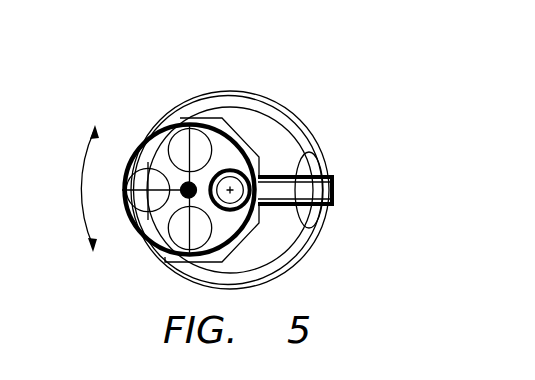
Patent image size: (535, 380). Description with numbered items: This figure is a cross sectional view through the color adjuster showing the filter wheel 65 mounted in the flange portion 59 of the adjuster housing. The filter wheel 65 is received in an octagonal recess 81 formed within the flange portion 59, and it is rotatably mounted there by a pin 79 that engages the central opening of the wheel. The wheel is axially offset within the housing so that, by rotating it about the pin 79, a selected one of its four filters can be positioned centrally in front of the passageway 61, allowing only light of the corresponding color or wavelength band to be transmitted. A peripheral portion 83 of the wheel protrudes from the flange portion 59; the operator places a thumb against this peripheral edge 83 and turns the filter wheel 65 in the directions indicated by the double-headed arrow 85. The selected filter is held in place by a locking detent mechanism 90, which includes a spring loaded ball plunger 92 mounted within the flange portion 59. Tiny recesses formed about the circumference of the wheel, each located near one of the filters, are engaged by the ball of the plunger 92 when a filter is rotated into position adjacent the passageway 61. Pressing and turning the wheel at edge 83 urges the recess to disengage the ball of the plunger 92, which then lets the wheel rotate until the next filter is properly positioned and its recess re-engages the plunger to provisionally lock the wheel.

The flange portion 59 is at (267, 138).
The passageway 61 is at (233, 186).
The filter wheel 65 is at (138, 150).
The pin 79 is at (195, 184).
The octagonal recess 81 is at (267, 284).
The peripheral portion 83 is at (132, 222).
The double-headed arrow 85 is at (80, 185).
The locking detent mechanism 90 is at (311, 152).
The spring loaded ball plunger 92 is at (309, 228).